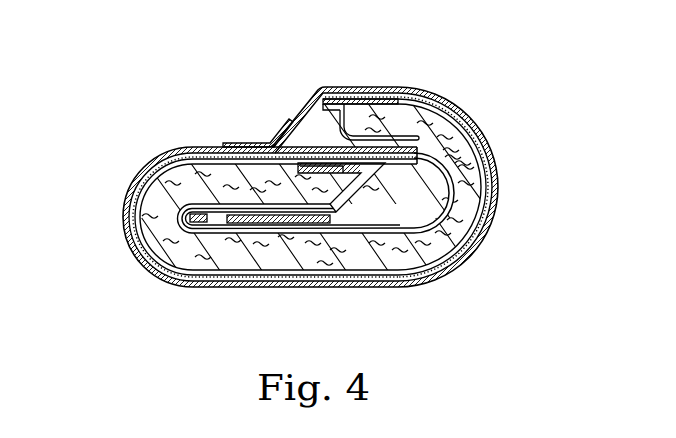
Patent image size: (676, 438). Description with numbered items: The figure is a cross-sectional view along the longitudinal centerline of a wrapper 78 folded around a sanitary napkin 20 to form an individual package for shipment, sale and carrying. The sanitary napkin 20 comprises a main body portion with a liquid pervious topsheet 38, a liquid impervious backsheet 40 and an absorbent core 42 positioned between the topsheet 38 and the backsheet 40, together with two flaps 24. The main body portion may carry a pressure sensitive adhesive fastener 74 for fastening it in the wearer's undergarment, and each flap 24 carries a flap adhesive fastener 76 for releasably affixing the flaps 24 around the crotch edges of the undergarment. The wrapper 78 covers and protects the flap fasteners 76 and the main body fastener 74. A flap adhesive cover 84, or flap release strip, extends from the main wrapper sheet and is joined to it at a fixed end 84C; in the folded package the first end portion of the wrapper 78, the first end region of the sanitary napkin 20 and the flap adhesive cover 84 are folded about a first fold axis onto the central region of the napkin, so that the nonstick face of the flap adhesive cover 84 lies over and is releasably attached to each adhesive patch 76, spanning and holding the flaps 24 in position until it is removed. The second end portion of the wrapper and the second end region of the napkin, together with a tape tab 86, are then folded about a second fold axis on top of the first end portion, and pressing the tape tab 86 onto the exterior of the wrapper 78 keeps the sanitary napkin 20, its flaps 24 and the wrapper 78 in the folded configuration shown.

The sanitary napkin 20 is at (318, 123).
The flaps 24 is at (358, 236).
The liquid pervious topsheet 38 is at (310, 105).
The liquid impervious backsheet 40 is at (367, 97).
The absorbent core 42 is at (136, 180).
The pressure sensitive adhesive fastener 74 is at (487, 165).
The flap adhesive fastener 76 is at (264, 232).
The wrapper 78 is at (407, 88).
The flap adhesive cover 84 is at (334, 162).
The fixed end 84C is at (486, 208).
The tape tab 86 is at (243, 146).